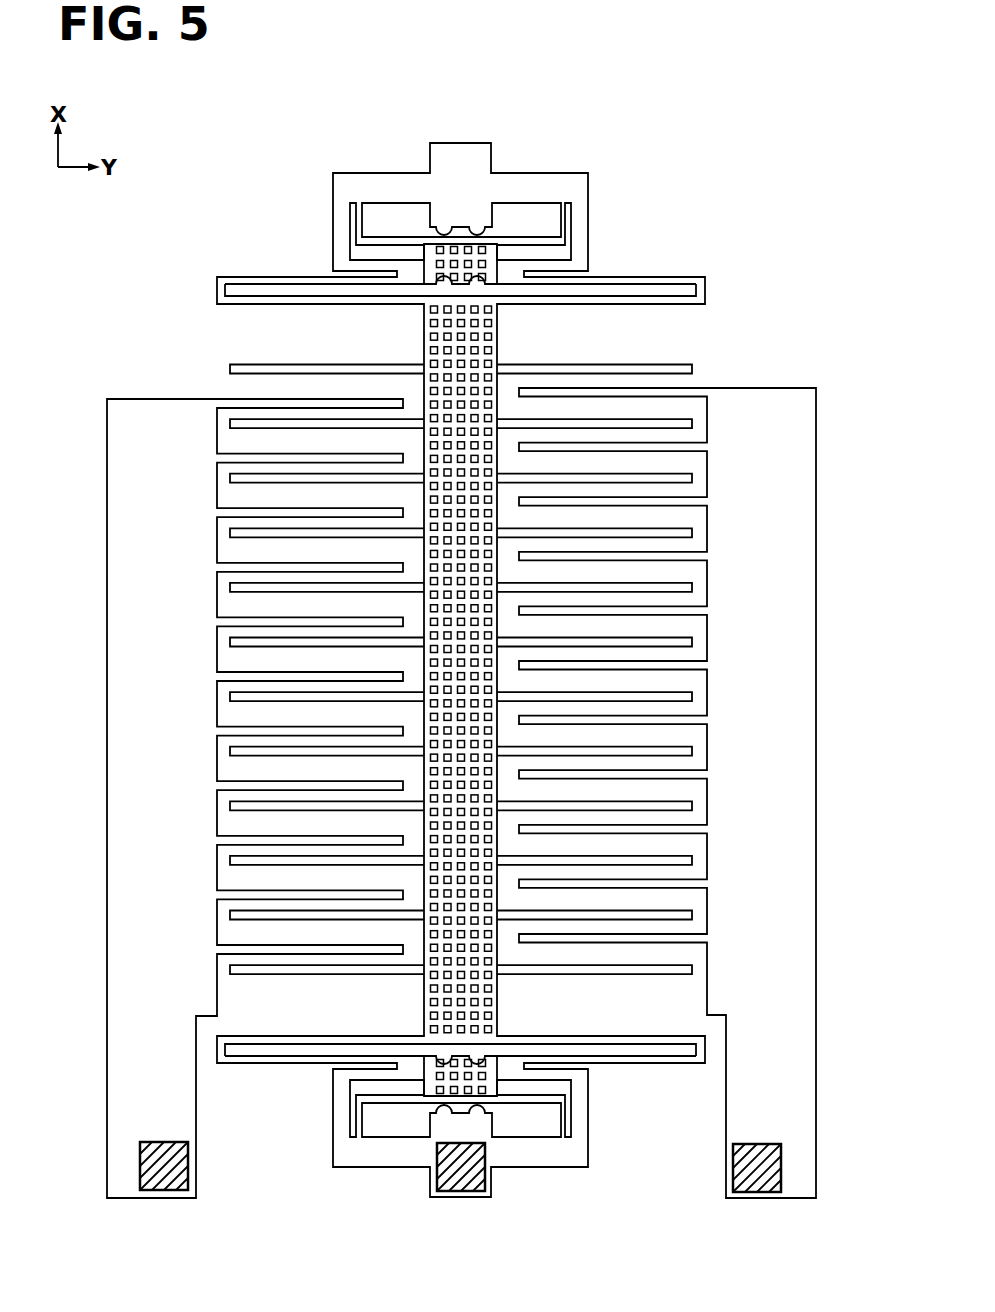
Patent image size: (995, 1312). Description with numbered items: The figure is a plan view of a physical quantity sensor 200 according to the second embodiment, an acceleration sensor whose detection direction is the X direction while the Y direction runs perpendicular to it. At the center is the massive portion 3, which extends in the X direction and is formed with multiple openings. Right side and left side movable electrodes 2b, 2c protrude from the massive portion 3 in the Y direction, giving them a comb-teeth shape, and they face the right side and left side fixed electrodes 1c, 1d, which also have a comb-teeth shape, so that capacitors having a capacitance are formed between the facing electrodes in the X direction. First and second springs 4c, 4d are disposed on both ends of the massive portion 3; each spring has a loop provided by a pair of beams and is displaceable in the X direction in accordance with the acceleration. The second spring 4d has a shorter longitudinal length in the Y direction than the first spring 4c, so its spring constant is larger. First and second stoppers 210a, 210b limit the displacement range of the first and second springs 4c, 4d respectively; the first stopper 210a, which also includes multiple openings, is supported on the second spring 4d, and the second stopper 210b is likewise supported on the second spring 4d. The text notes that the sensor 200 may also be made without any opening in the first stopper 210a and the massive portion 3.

The physical quantity sensor 200 is at (828, 804).
The massive portion 3 is at (483, 577).
The right side movable electrode 2b is at (667, 642).
The left side movable electrode 2c is at (283, 478).
The right side fixed electrode 1c is at (693, 602).
The left side fixed electrode 1d is at (262, 619).
The first spring 4c is at (233, 294).
The second spring 4d is at (388, 238).
The first stopper 210a is at (470, 273).
The second stopper 210b is at (470, 223).